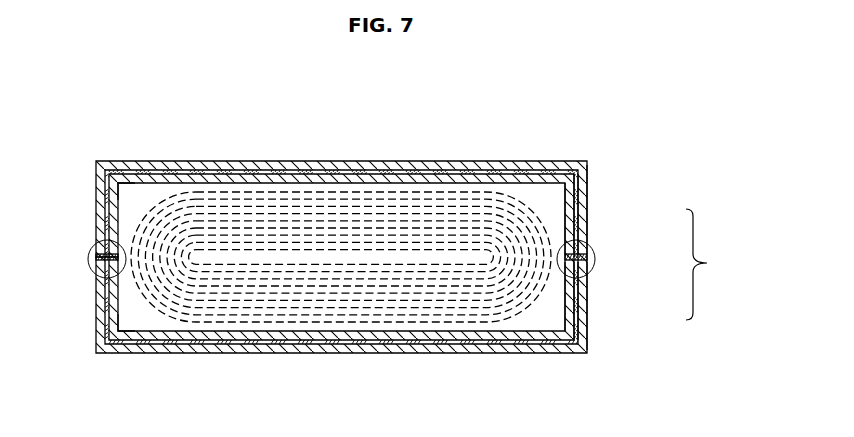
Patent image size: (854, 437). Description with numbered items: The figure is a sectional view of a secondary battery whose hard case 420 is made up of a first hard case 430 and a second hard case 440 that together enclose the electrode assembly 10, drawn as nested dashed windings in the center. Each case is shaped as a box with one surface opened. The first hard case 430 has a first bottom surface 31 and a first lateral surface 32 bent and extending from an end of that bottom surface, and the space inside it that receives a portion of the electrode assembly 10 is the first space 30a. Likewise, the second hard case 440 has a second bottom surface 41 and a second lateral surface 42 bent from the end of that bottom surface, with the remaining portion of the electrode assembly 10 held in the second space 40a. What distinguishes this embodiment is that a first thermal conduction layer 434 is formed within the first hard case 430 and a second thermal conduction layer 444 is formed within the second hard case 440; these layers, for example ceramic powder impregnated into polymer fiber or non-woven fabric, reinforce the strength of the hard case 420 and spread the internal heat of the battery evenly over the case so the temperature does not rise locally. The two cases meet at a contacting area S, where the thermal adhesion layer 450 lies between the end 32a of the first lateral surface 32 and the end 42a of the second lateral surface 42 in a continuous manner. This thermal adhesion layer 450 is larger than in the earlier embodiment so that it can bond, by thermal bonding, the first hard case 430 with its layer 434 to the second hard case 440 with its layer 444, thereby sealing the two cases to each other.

The electrode assembly 10 is at (287, 191).
The second space 40a is at (136, 183).
The second bottom surface 41 is at (364, 167).
The second lateral surface 42 is at (581, 194).
The end of the second lateral surface 42a is at (100, 254).
The first space 30a is at (140, 319).
The first bottom surface 31 is at (253, 354).
The first lateral surface 32 is at (578, 318).
The end of the first lateral surface 32a is at (100, 263).
The hard case 420 is at (721, 264).
The second hard case 440 is at (601, 216).
The first hard case 430 is at (601, 311).
The second thermal conduction layer 444 is at (468, 176).
The first thermal conduction layer 434 is at (347, 343).
The thermal adhesion layer 450 is at (592, 258).
The contacting area S is at (92, 260).